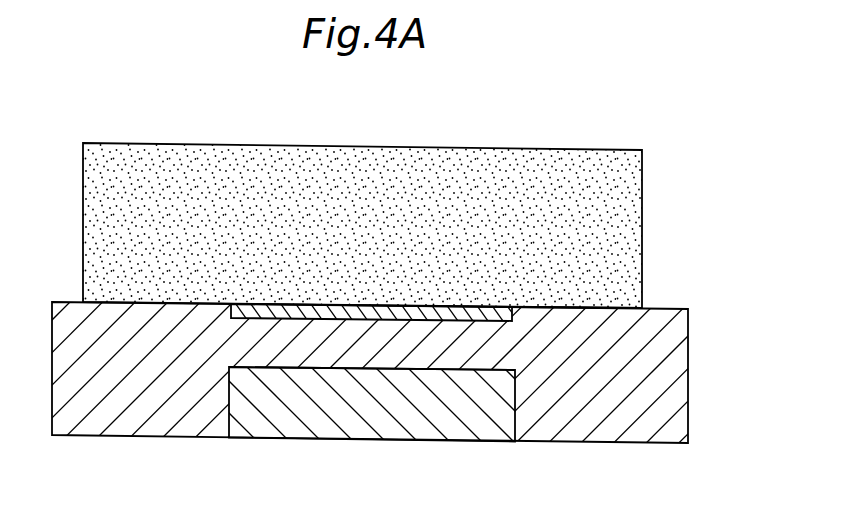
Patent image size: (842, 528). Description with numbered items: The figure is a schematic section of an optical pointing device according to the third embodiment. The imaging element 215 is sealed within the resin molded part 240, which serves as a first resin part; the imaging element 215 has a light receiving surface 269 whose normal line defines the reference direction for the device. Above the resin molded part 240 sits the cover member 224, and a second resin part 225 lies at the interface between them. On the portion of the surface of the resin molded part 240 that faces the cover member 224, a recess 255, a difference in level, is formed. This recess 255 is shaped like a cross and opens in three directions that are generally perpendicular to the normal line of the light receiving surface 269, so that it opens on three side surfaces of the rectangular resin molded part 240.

The cover member 224 is at (572, 165).
The second resin part 225 is at (560, 307).
The resin molded part 240 is at (573, 398).
The imaging element 215 is at (373, 423).
The recess 255 is at (331, 316).
The light receiving surface 269 is at (290, 368).